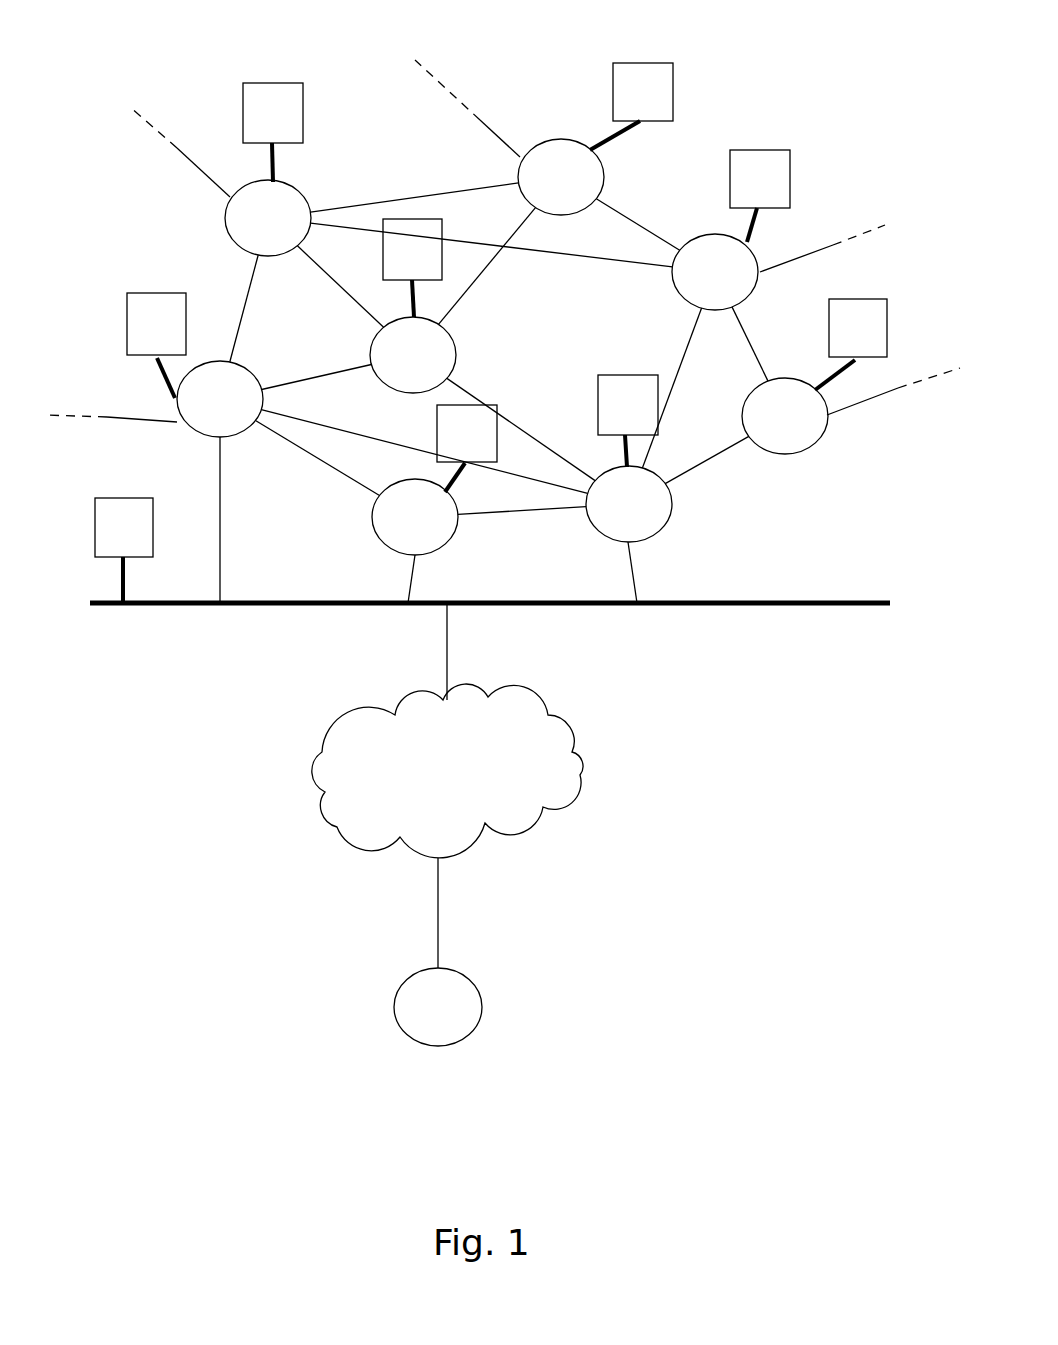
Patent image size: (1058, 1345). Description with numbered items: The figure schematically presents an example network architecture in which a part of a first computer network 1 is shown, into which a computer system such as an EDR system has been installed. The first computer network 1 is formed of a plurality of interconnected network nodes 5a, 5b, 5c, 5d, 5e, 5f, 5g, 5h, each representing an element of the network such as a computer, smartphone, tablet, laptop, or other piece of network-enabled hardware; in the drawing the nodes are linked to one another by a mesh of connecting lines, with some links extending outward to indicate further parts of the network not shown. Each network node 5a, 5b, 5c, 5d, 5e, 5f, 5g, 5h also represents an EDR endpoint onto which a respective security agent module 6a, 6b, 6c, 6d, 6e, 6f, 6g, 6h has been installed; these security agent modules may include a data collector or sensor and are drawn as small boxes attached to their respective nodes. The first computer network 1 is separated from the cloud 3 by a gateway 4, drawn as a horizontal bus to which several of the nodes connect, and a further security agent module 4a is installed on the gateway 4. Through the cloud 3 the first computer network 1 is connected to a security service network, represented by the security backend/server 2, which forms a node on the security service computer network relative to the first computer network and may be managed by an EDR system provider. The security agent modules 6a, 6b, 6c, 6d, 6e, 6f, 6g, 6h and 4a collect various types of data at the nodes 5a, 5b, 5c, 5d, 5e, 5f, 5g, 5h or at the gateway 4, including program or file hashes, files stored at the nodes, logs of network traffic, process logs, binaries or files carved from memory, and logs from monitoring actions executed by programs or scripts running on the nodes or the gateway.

The first computer network 1 is at (723, 65).
The security backend/server 2 is at (438, 1007).
The cloud 3 is at (447, 771).
The gateway 4 is at (815, 603).
The security agent module 4a is at (124, 550).
The network node 5a is at (268, 218).
The network node 5b is at (561, 177).
The network node 5c is at (715, 272).
The network node 5d is at (785, 416).
The network node 5e is at (629, 504).
The network node 5f is at (415, 517).
The network node 5g is at (220, 399).
The network node 5h is at (413, 355).
The security agent module 6a is at (273, 132).
The security agent module 6b is at (631, 106).
The security agent module 6c is at (760, 196).
The security agent module 6d is at (851, 344).
The security agent module 6e is at (628, 421).
The security agent module 6f is at (467, 448).
The security agent module 6g is at (156, 345).
The security agent module 6h is at (412, 268).